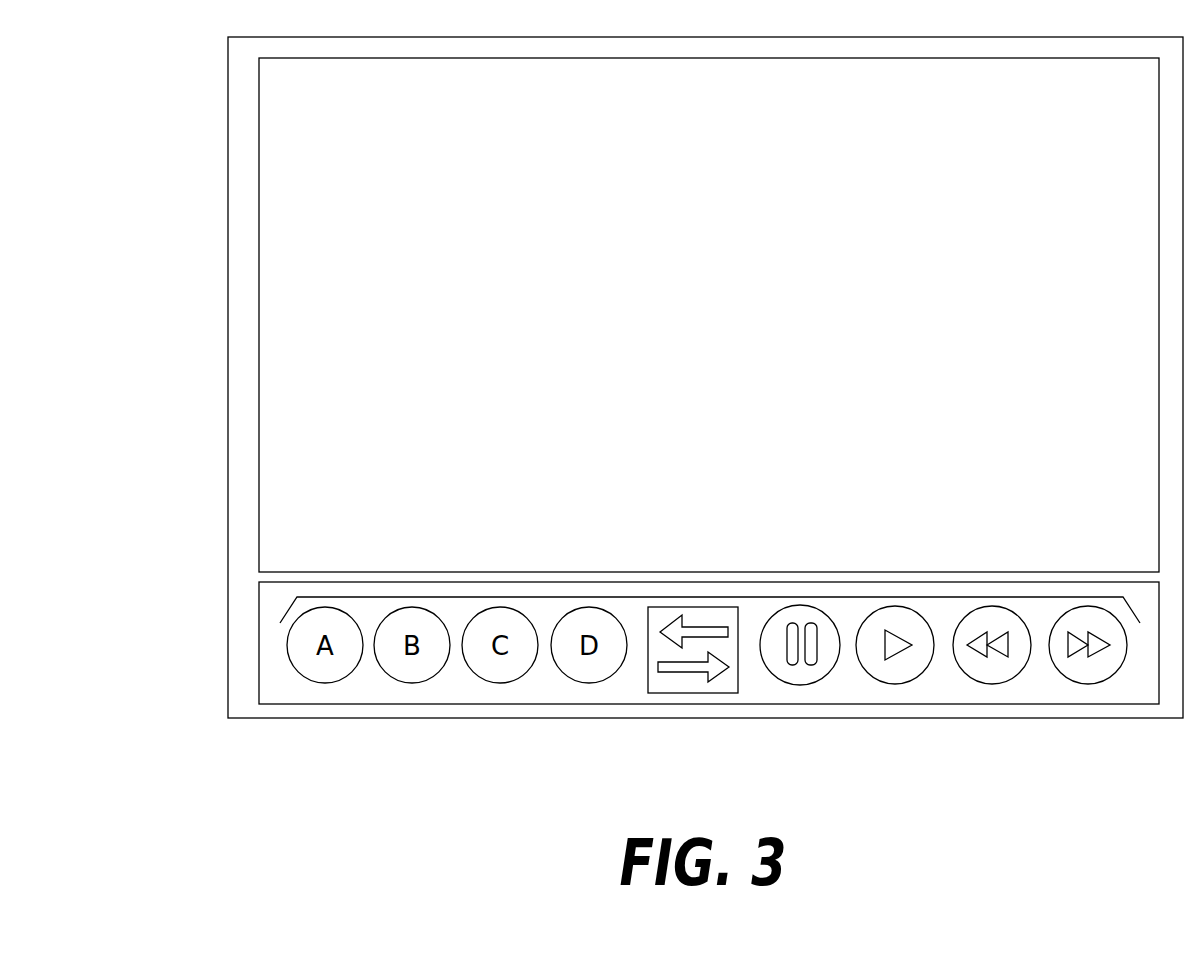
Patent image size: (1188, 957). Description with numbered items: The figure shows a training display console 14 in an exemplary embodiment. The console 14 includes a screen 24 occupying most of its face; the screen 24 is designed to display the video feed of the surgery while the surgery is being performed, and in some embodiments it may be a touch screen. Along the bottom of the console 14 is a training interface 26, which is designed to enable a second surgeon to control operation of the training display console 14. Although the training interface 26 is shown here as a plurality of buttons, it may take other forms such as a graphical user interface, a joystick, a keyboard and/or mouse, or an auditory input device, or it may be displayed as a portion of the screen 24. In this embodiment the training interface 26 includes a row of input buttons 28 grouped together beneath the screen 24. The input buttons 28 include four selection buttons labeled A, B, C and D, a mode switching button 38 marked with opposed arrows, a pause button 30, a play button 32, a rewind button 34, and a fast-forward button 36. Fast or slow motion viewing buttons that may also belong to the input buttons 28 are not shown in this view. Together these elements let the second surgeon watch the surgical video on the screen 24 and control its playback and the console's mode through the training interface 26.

The training display console 14 is at (228, 315).
The screen 24 is at (258, 158).
The training interface 26 is at (258, 633).
The input buttons 28 is at (702, 597).
The pause button 30 is at (793, 685).
The play button 32 is at (887, 684).
The rewind button 34 is at (985, 684).
The fast-forward button 36 is at (1085, 684).
The mode switching button 38 is at (666, 693).